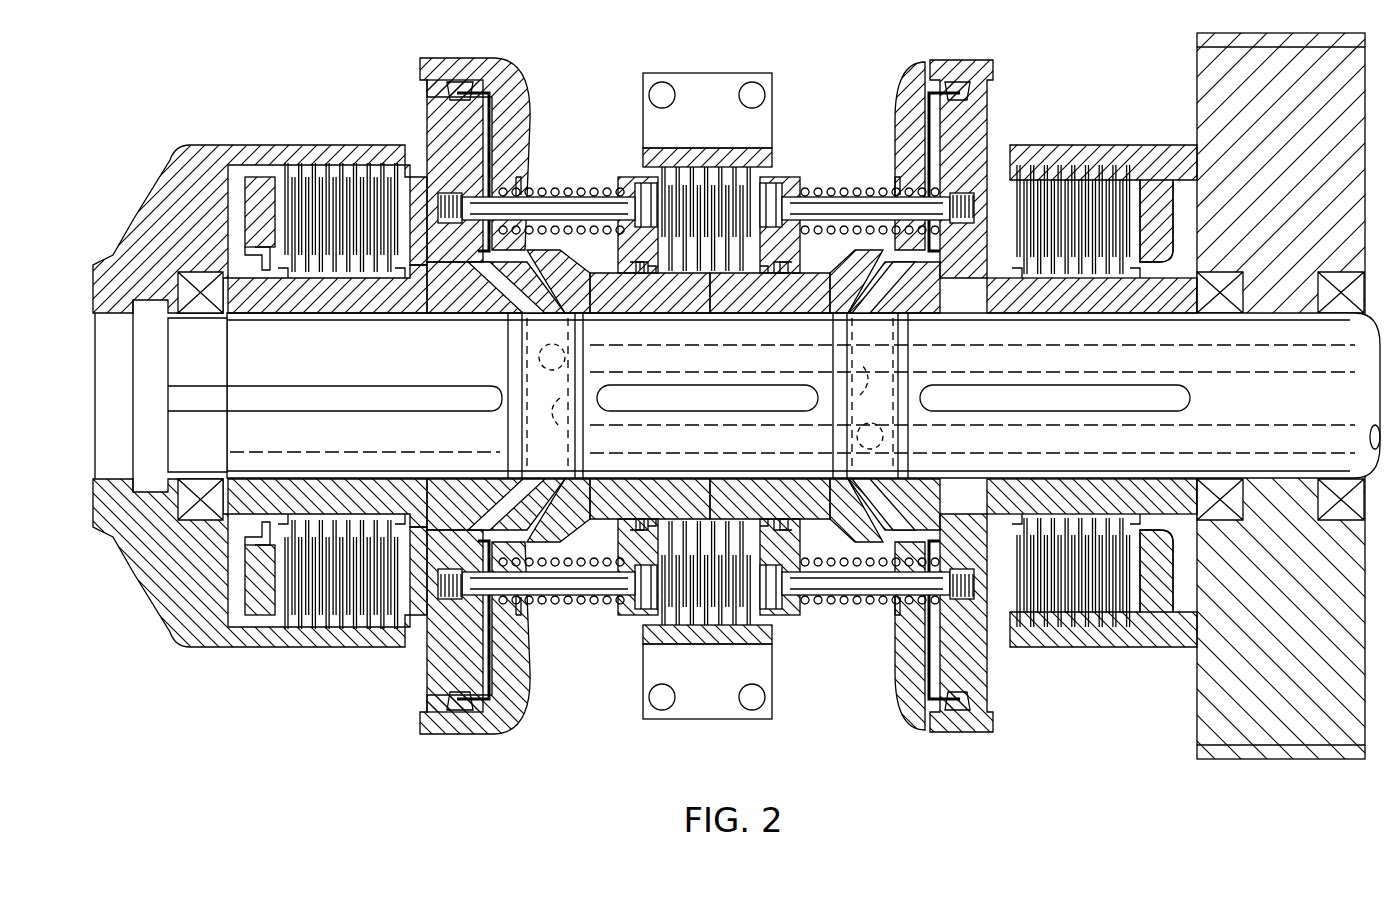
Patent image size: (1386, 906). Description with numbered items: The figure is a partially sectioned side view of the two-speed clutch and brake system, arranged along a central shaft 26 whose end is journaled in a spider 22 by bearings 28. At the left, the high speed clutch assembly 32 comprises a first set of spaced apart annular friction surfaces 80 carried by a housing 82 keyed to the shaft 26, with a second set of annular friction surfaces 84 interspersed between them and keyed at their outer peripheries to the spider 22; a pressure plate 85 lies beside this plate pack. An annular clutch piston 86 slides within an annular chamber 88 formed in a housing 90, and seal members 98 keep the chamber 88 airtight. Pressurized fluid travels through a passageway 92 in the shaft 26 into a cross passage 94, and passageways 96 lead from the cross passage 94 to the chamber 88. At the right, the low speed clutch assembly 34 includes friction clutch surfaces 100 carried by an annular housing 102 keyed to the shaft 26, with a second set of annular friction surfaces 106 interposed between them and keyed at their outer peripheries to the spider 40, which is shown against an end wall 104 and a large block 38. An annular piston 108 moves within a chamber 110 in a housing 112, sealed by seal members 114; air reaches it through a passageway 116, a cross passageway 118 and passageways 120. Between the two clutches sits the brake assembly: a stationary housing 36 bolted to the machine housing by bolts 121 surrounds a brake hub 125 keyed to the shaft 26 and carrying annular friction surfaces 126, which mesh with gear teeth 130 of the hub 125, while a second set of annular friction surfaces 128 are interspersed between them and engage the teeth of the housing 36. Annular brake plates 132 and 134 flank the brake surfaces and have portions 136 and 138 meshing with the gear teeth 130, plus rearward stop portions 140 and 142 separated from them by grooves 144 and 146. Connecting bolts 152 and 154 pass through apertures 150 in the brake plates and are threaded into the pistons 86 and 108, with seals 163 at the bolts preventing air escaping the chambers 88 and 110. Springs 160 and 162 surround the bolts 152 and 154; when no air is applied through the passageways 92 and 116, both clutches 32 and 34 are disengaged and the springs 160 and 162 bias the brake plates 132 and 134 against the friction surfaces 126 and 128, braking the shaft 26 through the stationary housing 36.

The spider 22 is at (175, 175).
The shaft 26 is at (400, 362).
The bearings 28 is at (205, 272).
The high speed clutch assembly 32 is at (336, 87).
The low speed clutch assembly 34 is at (1121, 90).
The stationary housing 36 is at (706, 145).
The end wall block 38 is at (1300, 730).
The spider 40 is at (1086, 145).
The annular friction surfaces 80 is at (296, 278).
The housing 82 is at (345, 278).
The annular friction surfaces 84 is at (288, 165).
The pressure plate 85 is at (258, 185).
The annular clutch piston 86 is at (427, 80).
The annular chamber 88 is at (492, 105).
The housing 90 is at (515, 78).
The pressurized fluid passageway 92 is at (1245, 372).
The cross passage 94 is at (588, 425).
The passageways 96 is at (483, 285).
The seal members 98 is at (456, 82).
The friction clutch surfaces 100 is at (1016, 278).
The annular housing 102 is at (1060, 280).
The cup wall 104 is at (1175, 200).
The annular friction surfaces 106 is at (1025, 170).
The annular piston 108 is at (990, 95).
The chamber 110 is at (927, 105).
The housing 112 is at (896, 76).
The seal members 114 is at (957, 82).
The passageway 116 is at (1305, 425).
The cross passageway 118 is at (840, 432).
The passageways 120 is at (935, 278).
The bolts 121 is at (660, 90).
The brake hub 125 is at (692, 508).
The annular friction surfaces 126 is at (655, 523).
The annular friction surfaces 128 is at (650, 165).
The gear teeth 130 is at (636, 540).
The annular brake plate 132 is at (618, 243).
The annular brake plate 134 is at (800, 243).
The portion 136 is at (665, 280).
The portion 138 is at (760, 280).
The rearward stop portion 140 is at (640, 278).
The rearward stop portion 142 is at (782, 278).
The groove 144 is at (635, 263).
The groove 146 is at (790, 263).
The apertures 150 is at (632, 188).
The connecting bolts 152 is at (540, 217).
The connecting bolts 154 is at (835, 217).
The springs 160 is at (561, 398).
The springs 162 is at (870, 398).
The seals 163 is at (520, 182).